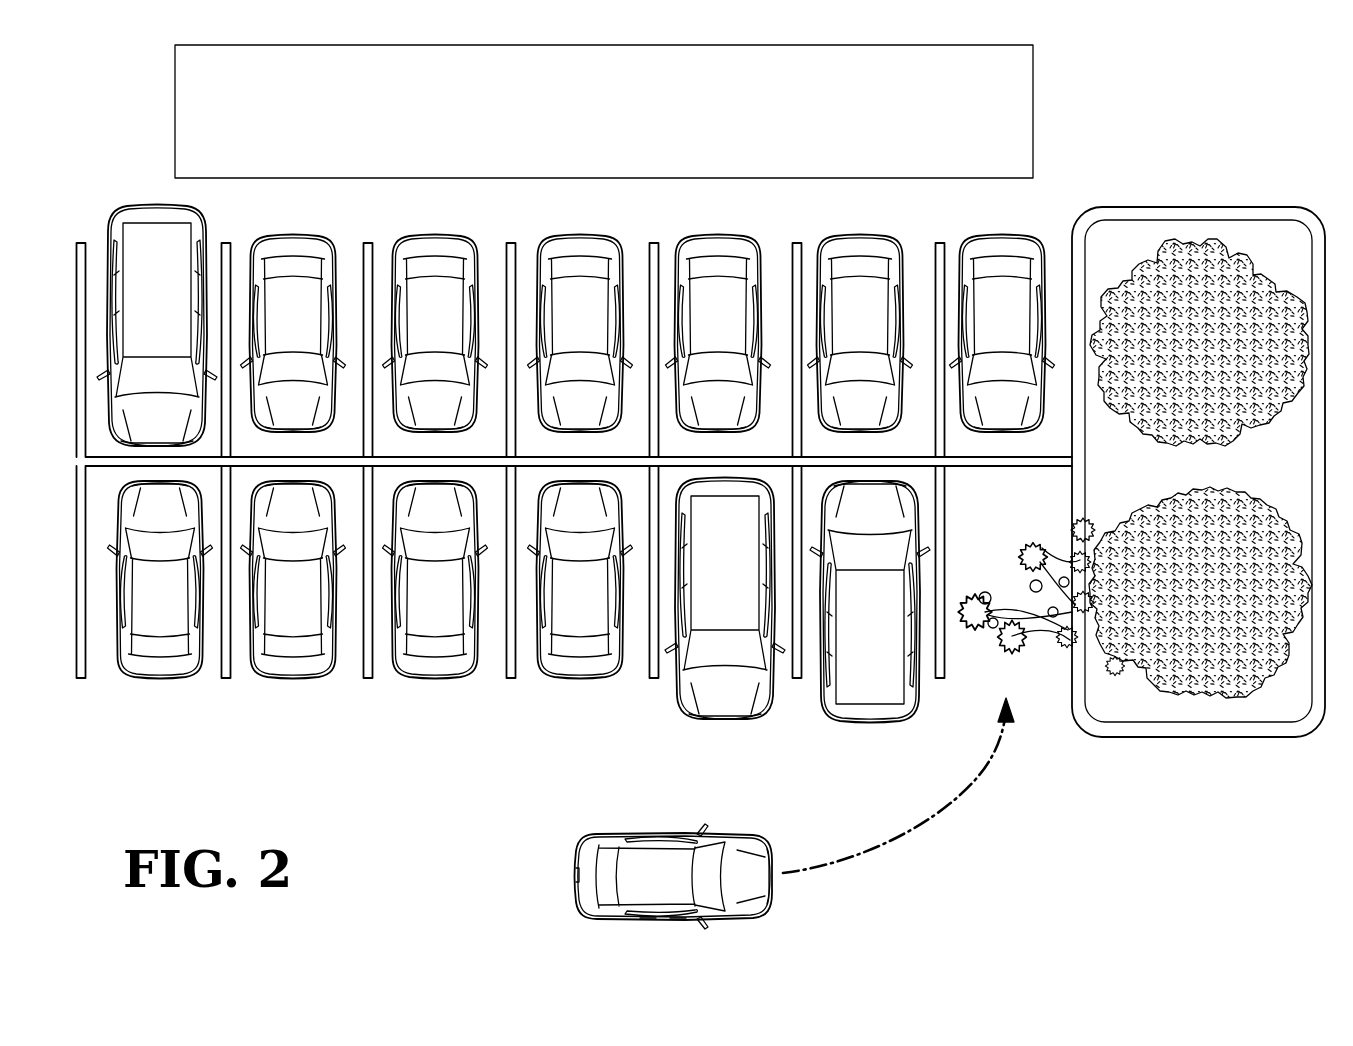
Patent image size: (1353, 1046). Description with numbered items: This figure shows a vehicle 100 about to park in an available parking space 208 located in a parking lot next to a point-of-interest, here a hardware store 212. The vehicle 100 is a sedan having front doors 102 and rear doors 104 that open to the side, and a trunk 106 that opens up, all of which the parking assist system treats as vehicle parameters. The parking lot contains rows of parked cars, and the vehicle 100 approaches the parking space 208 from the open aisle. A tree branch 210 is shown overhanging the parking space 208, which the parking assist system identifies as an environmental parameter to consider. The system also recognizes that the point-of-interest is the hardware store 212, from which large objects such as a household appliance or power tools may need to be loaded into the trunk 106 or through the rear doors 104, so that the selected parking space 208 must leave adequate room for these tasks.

The vehicle 100 is at (772, 905).
The front doors 102 is at (678, 920).
The rear doors 104 is at (648, 920).
The trunk 106 is at (575, 875).
The parking space 208 is at (1024, 674).
The tree branch 210 is at (975, 640).
The hardware store 212 is at (1033, 113).